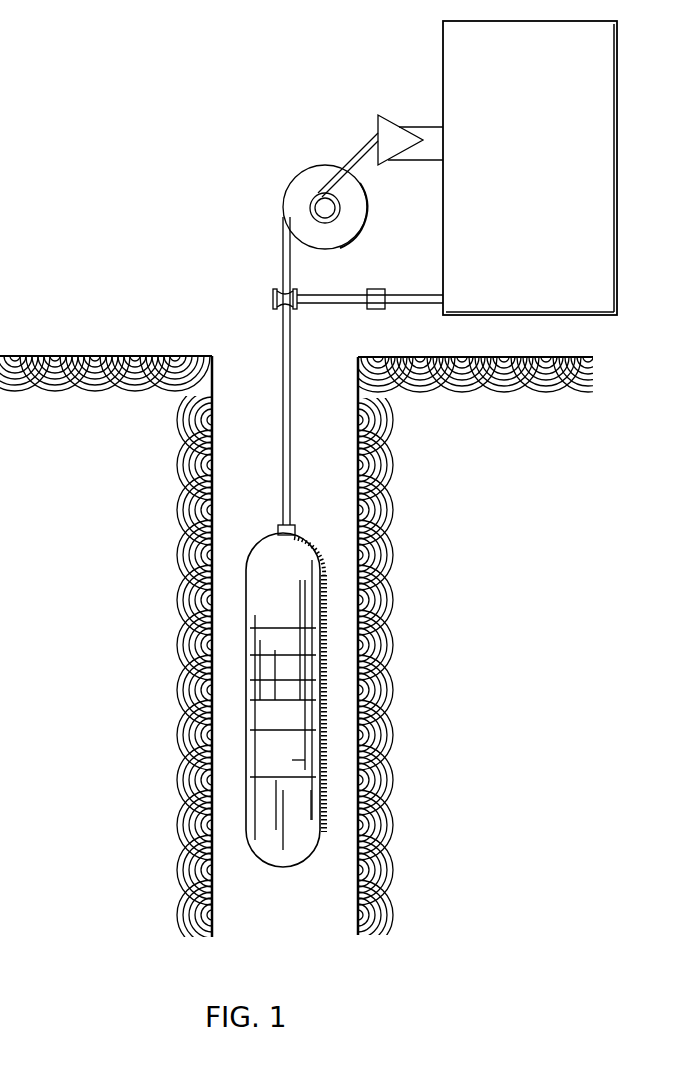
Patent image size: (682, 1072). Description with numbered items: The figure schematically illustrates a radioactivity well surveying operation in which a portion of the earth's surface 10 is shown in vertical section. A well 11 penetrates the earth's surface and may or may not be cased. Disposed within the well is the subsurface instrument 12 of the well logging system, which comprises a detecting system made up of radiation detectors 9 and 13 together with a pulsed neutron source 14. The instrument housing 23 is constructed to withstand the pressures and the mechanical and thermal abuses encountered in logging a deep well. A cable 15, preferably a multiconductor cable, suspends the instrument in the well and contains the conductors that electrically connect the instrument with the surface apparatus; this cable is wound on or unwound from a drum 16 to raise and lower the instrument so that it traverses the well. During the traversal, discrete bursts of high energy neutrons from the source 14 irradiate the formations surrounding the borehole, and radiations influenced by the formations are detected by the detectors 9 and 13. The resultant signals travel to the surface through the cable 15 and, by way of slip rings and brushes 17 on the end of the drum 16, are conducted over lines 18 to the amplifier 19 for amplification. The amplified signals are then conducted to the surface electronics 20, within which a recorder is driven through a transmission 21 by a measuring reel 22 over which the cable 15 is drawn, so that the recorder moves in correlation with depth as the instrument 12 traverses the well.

The radiation detector 9 is at (325, 695).
The earth's surface 10 is at (100, 378).
The well 11 is at (256, 380).
The subsurface instrument 12 is at (325, 598).
The radiation detector 13 is at (325, 648).
The pulsed neutron source 14 is at (300, 760).
The cable 15 is at (291, 480).
The drum 16 is at (359, 232).
The slip rings and brushes 17 is at (340, 206).
The lines 18 is at (357, 146).
The amplifier 19 is at (379, 116).
The surface electronics 20 is at (618, 50).
The transmission 21 is at (386, 290).
The measuring reel 22 is at (290, 294).
The instrument housing 23 is at (300, 828).